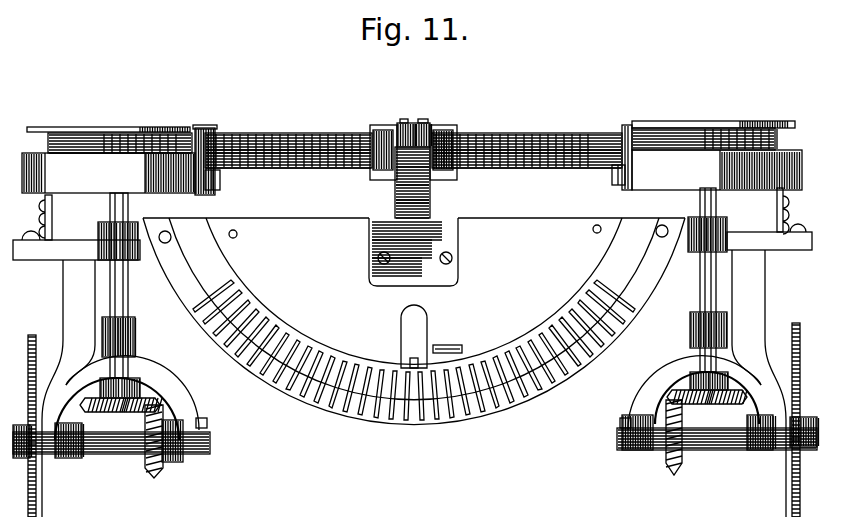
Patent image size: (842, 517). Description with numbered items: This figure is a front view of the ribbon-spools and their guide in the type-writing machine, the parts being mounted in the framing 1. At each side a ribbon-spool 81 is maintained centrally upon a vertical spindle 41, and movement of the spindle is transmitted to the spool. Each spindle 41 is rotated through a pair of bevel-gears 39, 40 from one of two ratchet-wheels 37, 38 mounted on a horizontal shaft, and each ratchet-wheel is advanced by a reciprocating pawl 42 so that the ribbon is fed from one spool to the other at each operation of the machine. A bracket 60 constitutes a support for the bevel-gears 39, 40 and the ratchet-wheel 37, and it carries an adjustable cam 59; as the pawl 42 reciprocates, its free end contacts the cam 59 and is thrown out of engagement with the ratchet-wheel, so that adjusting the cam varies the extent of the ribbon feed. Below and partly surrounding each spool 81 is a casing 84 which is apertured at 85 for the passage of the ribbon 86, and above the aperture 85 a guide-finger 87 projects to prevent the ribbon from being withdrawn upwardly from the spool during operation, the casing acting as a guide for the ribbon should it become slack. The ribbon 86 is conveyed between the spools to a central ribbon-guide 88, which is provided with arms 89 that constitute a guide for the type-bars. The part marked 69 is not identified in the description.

The framing 1 is at (64, 246).
The ratchet-wheel 37 is at (36, 490).
The ratchet-wheel 38 is at (800, 477).
The bevel-gear 39 is at (155, 477).
The bevel-gear 40 is at (413, 403).
The spindle 41 is at (128, 297).
The reciprocating pawl 42 is at (767, 516).
The cam 59 is at (790, 463).
The bracket 60 is at (196, 404).
The support 69 is at (60, 513).
The ribbon-spool 81 is at (153, 125).
The casing 84 is at (412, 171).
The aperture 85 is at (220, 182).
The ribbon 86 is at (93, 140).
The guide-finger 87 is at (212, 125).
The ribbon-guide 88 is at (395, 128).
The arms 89 is at (430, 128).